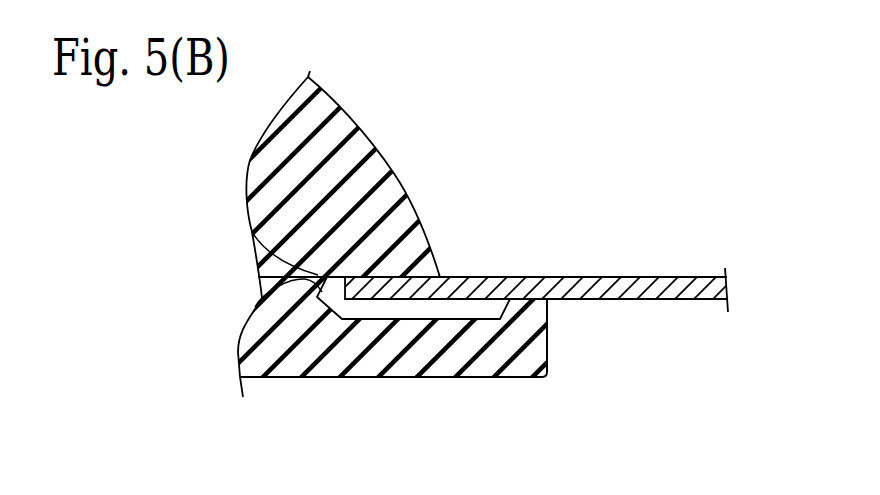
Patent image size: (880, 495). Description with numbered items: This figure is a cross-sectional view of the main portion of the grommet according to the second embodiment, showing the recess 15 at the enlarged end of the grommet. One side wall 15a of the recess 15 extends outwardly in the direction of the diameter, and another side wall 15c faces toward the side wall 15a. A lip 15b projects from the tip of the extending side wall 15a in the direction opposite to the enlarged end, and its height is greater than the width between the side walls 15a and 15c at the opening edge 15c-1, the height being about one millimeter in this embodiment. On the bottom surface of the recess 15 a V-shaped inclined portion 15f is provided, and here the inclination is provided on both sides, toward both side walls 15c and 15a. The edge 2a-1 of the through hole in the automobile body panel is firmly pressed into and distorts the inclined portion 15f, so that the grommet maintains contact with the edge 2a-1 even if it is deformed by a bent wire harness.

The edge of the through hole 2a-1 is at (252, 232).
The recess 15 is at (380, 313).
The side wall 15a is at (477, 323).
The lip 15b is at (548, 323).
The side wall 15c is at (440, 277).
The opening edge 15c-1 is at (440, 263).
The inclined portion 15f is at (255, 307).